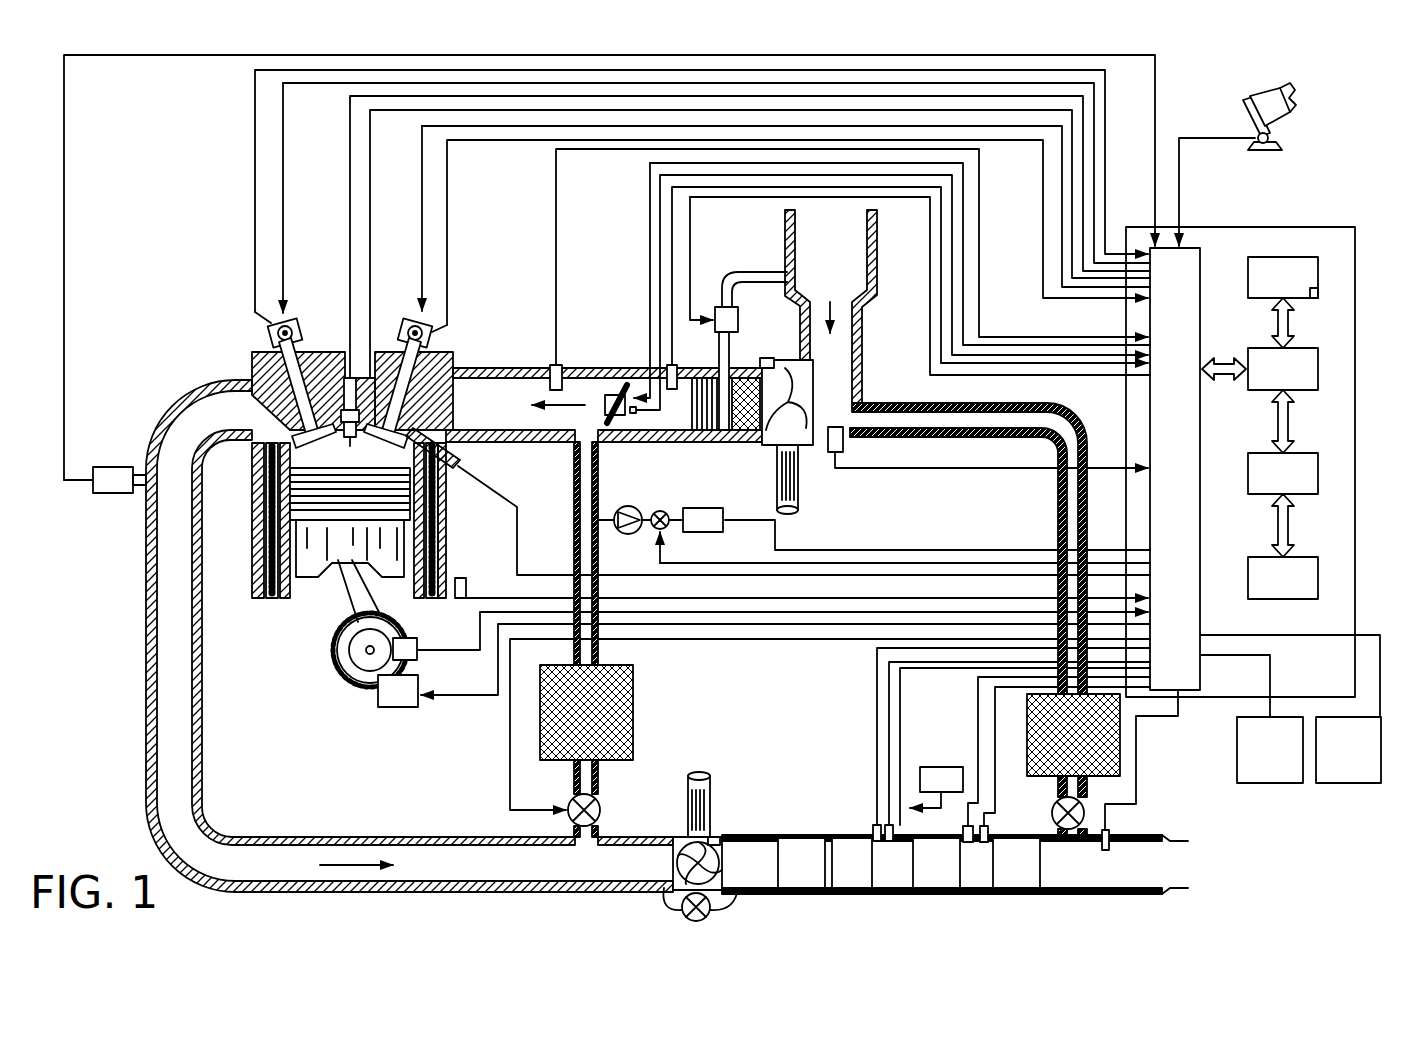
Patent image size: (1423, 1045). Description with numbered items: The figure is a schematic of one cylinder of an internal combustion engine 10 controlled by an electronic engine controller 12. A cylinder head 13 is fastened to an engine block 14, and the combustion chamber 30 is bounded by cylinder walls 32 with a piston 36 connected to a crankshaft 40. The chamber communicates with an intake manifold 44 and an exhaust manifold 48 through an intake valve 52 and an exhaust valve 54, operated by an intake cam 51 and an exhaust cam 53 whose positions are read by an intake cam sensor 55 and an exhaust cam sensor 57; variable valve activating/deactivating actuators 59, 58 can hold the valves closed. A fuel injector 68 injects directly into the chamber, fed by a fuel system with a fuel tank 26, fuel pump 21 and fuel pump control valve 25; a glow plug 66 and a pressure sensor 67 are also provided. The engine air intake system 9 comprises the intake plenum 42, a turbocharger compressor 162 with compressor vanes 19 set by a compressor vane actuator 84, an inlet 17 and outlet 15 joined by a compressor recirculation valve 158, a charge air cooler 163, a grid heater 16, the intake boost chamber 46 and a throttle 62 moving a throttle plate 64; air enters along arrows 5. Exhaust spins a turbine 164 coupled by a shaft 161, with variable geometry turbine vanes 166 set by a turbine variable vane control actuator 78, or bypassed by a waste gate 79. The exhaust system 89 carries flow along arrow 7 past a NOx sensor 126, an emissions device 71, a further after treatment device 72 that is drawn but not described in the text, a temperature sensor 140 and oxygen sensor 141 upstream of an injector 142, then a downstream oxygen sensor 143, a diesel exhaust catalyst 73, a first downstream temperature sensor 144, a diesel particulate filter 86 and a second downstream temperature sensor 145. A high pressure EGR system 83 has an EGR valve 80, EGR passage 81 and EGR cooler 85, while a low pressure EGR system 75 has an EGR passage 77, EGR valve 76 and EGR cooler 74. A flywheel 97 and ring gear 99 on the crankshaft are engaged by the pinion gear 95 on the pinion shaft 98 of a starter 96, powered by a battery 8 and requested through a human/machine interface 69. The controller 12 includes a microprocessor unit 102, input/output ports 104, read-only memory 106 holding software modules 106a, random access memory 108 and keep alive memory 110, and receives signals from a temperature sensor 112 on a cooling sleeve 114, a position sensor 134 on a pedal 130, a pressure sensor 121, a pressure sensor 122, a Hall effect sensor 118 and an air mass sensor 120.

The arrows 5 is at (855, 326).
The arrow 7 is at (347, 862).
The battery 8 is at (1348, 750).
The engine air intake system 9 is at (638, 296).
The internal combustion engine 10 is at (188, 301).
The electronic engine controller 12 is at (1274, 445).
The cylinder head 13 is at (468, 343).
The engine block 14 is at (252, 462).
The outlet of compressor 15 is at (745, 365).
The grid heater 16 is at (703, 422).
The inlet of compressor 17 is at (826, 402).
The compressor vanes 19 is at (800, 414).
The fuel pump 21 is at (630, 507).
The fuel pump control valve 25 is at (655, 528).
The fuel tank 26 is at (823, 658).
The combustion chamber 30 is at (350, 448).
The cylinder walls 32 is at (295, 590).
The piston 36 is at (327, 590).
The crankshaft 40 is at (350, 688).
The intake plenum 42 is at (831, 306).
The intake manifold 44 is at (604, 405).
The intake boost chamber 46 is at (674, 408).
The exhaust manifold 48 is at (432, 623).
The intake cam 51 is at (412, 325).
The intake valve 52 is at (398, 424).
The exhaust cam 53 is at (272, 335).
The exhaust valve 54 is at (293, 412).
The intake cam sensor 55 is at (430, 338).
The exhaust cam sensor 57 is at (282, 348).
The variable valve activating/deactivating actuator 58 is at (300, 333).
The variable valve activating/deactivating actuator 59 is at (412, 340).
The electronic throttle 62 is at (620, 386).
The throttle plate 64 is at (627, 384).
The glow plug 66 is at (352, 405).
The pressure sensor 67 is at (388, 400).
The fuel injector 68 is at (452, 470).
The human/machine interface 69 is at (1270, 750).
The emissions device 71 is at (801, 863).
The second emission control device 72 is at (852, 863).
The diesel exhaust catalyst 73 is at (936, 863).
The EGR cooler 74 is at (1027, 752).
The low pressure EGR system 75 is at (1145, 763).
The EGR valve 76 is at (1084, 806).
The EGR passage 77 is at (1073, 510).
The turbine variable vane control actuator 78 is at (722, 843).
The waste gate 79 is at (712, 908).
The EGR valve 80 is at (573, 800).
The EGR passage 81 is at (580, 475).
The high pressure EGR system 83 is at (494, 780).
The compressor vane actuator 84 is at (766, 358).
The EGR cooler 85 is at (637, 712).
The diesel particulate filter 86 is at (1016, 863).
The exhaust system 89 is at (122, 424).
The pinion gear 95 is at (412, 712).
The starter 96 is at (412, 708).
The flywheel 97 is at (338, 662).
The pinion shaft 98 is at (392, 710).
The ring gear 99 is at (365, 695).
The microprocessor unit 102 is at (1318, 374).
The input/output ports 104 is at (1202, 258).
The read-only memory 106 is at (1318, 268).
The software modules 106a is at (1318, 293).
The random access memory 108 is at (1318, 470).
The keep alive memory 110 is at (1318, 574).
The temperature sensor 112 is at (460, 582).
The cooling sleeve 114 is at (270, 513).
The Hall effect sensor 118 is at (418, 640).
The sensor 120 is at (845, 452).
The pressure sensor 121 is at (555, 366).
The pressure sensor 122 is at (675, 368).
The NOx sensor 126 is at (108, 494).
The pedal 130 is at (1243, 110).
The position sensor 134 is at (1285, 146).
The temperature sensor 140 is at (874, 832).
The oxygen sensor 141 is at (888, 843).
The injector 142 is at (903, 800).
The downstream oxygen sensor 143 is at (965, 834).
The first downstream temperature sensor 144 is at (986, 834).
The second downstream temperature sensor 145 is at (1108, 836).
The compressor recirculation valve 158 is at (722, 307).
The shaft 161 is at (795, 512).
The turbocharger compressor 162 is at (762, 447).
The charge air cooler 163 is at (746, 430).
The turbine 164 is at (680, 830).
The variable geometry turbine vanes 166 is at (722, 866).